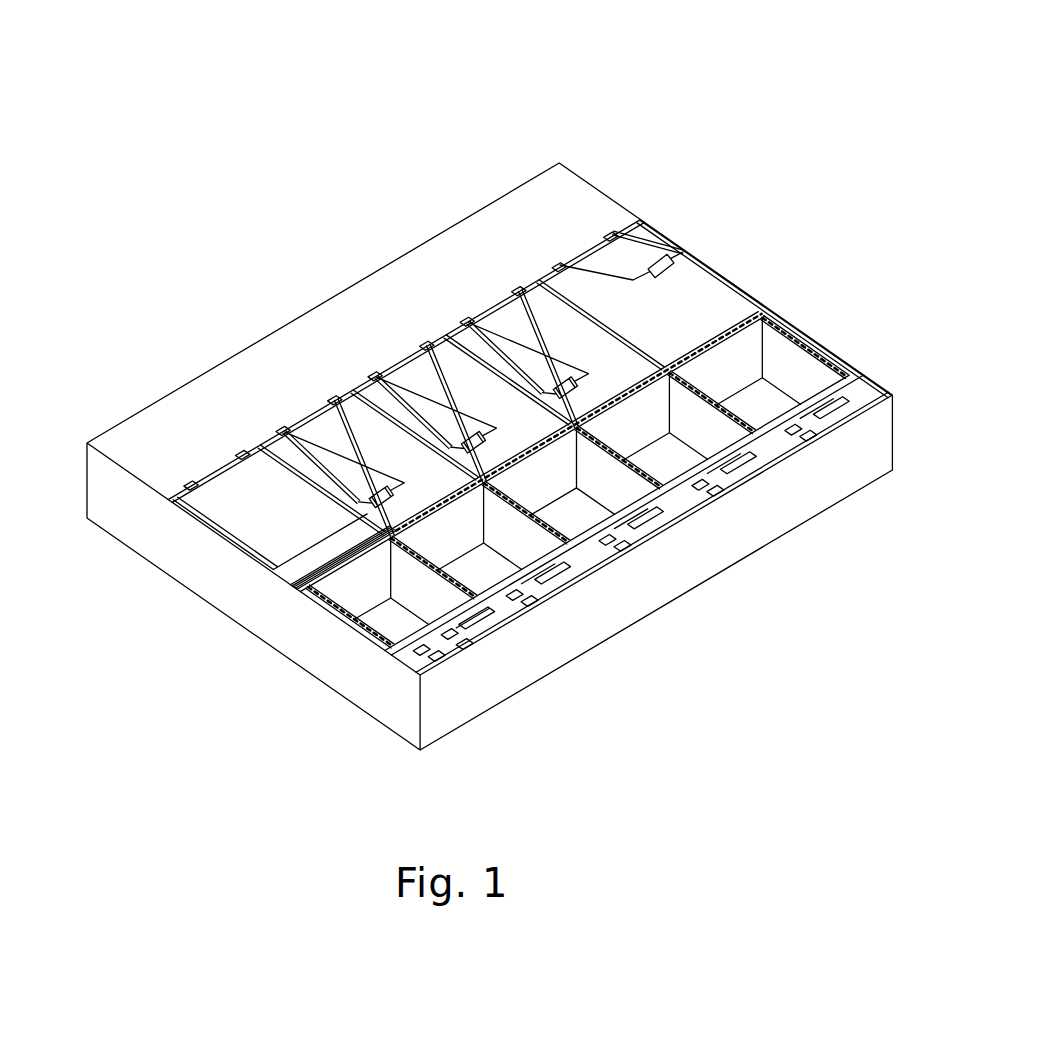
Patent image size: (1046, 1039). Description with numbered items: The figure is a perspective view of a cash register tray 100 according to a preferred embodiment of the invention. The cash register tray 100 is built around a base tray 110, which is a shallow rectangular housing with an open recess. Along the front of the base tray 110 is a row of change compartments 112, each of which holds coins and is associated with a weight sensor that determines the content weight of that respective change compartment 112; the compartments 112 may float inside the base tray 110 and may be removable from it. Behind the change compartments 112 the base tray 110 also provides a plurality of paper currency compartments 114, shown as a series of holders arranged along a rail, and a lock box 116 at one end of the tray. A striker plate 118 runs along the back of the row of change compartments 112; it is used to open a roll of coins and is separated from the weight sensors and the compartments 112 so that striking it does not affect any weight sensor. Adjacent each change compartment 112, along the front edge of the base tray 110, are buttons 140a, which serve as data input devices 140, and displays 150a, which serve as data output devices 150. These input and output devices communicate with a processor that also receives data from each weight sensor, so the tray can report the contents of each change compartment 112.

The cash register tray 100 is at (788, 120).
The base tray 110 is at (255, 612).
The change compartments 112 is at (645, 407).
The paper currency compartments 114 is at (588, 288).
The lock box 116 is at (292, 519).
The striker plate 118 is at (697, 362).
The data input device 140 is at (787, 441).
The buttons 140a is at (696, 497).
The data output device 150 is at (840, 410).
The displays 150a is at (835, 397).